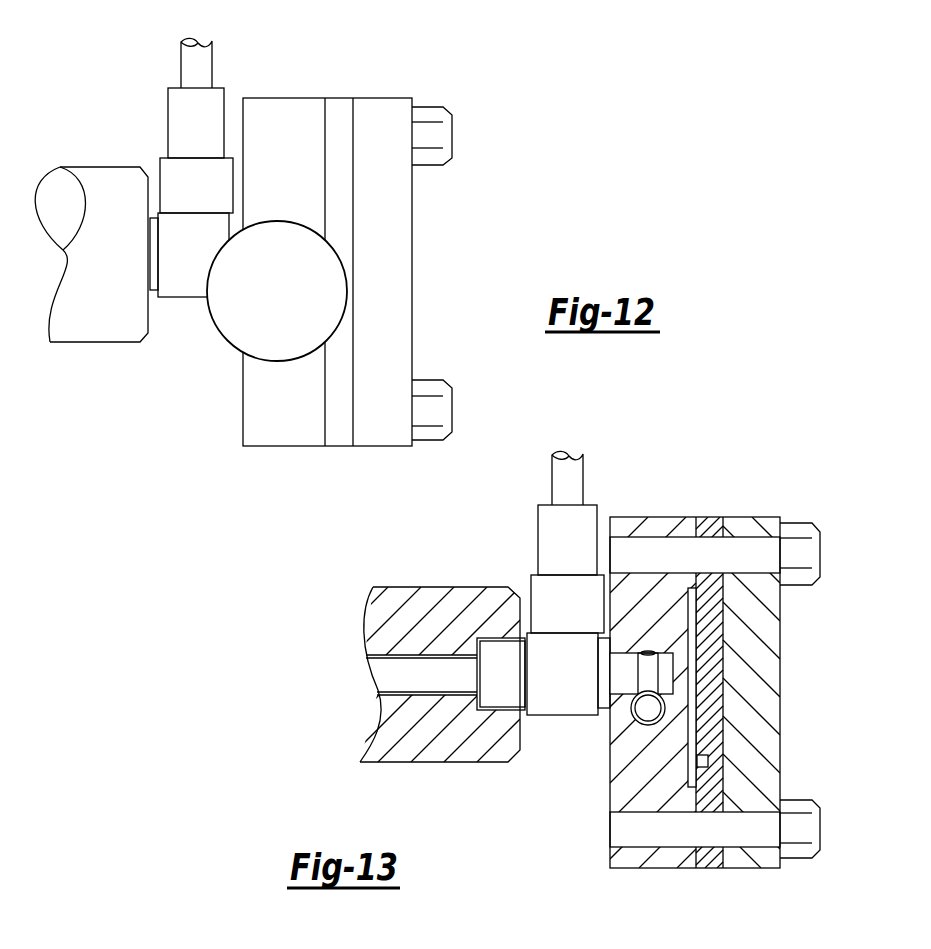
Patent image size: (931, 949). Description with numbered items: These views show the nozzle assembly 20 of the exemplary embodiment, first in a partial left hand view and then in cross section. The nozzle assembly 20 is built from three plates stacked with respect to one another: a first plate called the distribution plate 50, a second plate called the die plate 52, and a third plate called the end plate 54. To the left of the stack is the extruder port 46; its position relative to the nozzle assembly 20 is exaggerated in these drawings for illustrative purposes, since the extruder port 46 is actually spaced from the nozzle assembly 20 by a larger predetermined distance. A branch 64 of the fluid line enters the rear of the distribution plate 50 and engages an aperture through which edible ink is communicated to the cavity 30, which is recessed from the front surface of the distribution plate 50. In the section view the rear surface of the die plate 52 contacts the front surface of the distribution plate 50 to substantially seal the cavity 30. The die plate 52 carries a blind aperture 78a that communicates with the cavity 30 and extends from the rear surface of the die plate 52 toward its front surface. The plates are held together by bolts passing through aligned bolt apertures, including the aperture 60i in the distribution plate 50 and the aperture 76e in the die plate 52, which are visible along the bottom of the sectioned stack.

In FIG. 12, the nozzle assembly 20 is at (204, 402).
In FIG. 12, the extruder port 46 is at (85, 320).
In FIG. 13, the extruder port 46 is at (448, 605).
In FIG. 12, the distribution plate 50 is at (283, 412).
In FIG. 13, the distribution plate 50 is at (628, 527).
In FIG. 12, the die plate 52 is at (340, 418).
In FIG. 13, the die plate 52 is at (710, 522).
In FIG. 12, the end plate 54 is at (387, 417).
In FIG. 13, the end plate 54 is at (762, 527).
In FIG. 12, the branch 64 is at (202, 60).
In FIG. 13, the cavity 30 is at (693, 755).
In FIG. 13, the blind aperture 78a is at (708, 765).
In FIG. 13, the aperture 60i is at (630, 848).
In FIG. 13, the aperture 76e is at (707, 847).